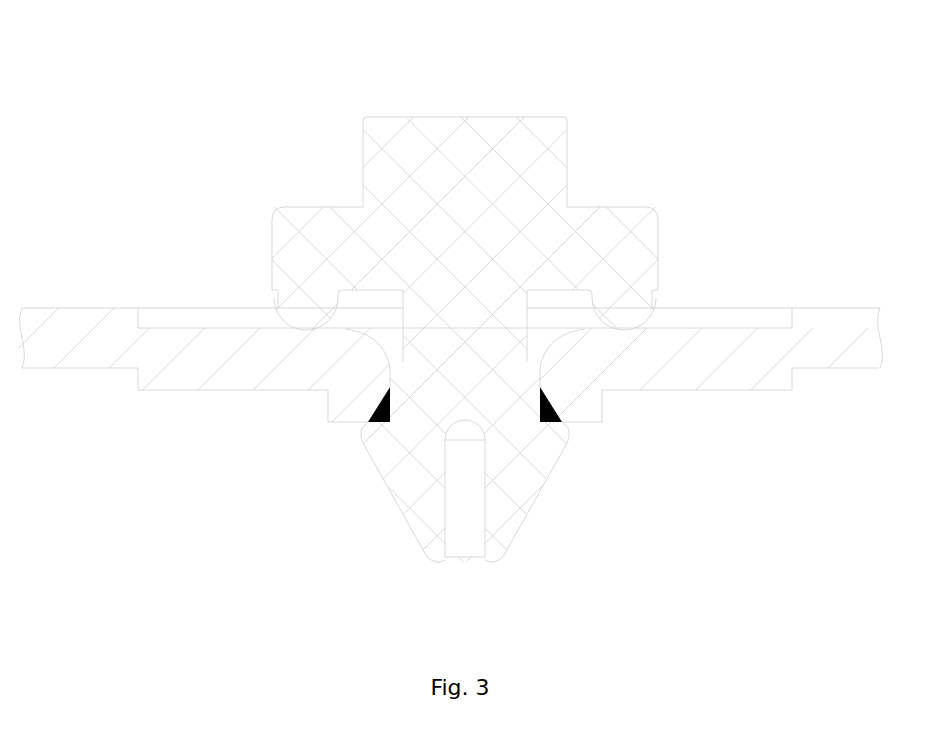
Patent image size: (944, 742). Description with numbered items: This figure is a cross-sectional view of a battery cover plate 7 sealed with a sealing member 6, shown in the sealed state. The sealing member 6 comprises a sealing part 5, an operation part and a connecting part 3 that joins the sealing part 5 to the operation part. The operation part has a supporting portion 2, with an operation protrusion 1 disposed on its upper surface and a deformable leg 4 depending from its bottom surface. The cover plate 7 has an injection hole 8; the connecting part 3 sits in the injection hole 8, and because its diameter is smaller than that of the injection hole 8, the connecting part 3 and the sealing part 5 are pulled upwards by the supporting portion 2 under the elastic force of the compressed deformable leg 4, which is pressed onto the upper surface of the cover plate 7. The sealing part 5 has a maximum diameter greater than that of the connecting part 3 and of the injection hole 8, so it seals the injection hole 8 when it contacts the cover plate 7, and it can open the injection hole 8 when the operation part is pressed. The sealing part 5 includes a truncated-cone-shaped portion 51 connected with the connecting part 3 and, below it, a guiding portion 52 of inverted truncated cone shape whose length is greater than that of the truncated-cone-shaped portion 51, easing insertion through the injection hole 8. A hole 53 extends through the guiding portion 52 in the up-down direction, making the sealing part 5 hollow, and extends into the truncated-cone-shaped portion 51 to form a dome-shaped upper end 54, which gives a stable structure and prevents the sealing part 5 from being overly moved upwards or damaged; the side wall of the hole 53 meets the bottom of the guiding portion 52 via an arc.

The operation protrusion 1 is at (520, 137).
The supporting portion 2 is at (607, 227).
The connecting part 3 is at (490, 342).
The deformable leg 4 is at (302, 314).
The sealing part 5 is at (568, 442).
The sealing member 6 is at (435, 237).
The cover plate 7 is at (220, 358).
The injection hole 8 is at (385, 339).
The truncated-cone-shaped portion 51 is at (440, 395).
The guiding portion 52 is at (513, 477).
The hole 53 is at (470, 532).
The dome-shaped upper end 54 is at (465, 432).